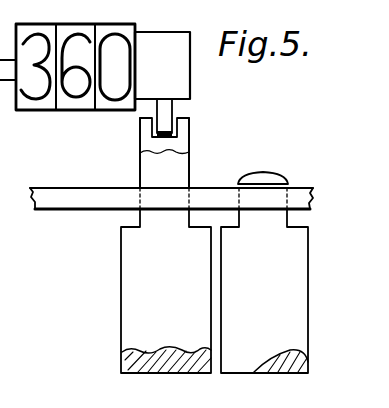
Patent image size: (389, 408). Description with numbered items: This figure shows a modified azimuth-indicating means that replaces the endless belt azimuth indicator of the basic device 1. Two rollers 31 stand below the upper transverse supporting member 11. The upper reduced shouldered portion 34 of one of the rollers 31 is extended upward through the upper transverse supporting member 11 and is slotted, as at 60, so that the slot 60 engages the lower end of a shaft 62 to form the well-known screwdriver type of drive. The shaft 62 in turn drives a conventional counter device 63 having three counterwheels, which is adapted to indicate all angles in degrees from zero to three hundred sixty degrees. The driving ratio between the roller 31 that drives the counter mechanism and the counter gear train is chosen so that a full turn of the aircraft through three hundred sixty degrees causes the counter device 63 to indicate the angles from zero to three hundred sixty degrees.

The counter display 63 is at (74, 112).
The plunger stem 62 is at (172, 112).
The cup fitting 60 is at (186, 134).
The container neck 34 is at (190, 169).
The support plate 11 is at (68, 210).
The container 31 is at (125, 306).
The apparatus 1 is at (0, 289).